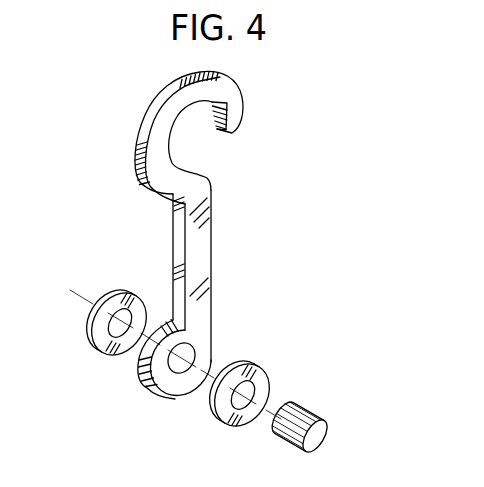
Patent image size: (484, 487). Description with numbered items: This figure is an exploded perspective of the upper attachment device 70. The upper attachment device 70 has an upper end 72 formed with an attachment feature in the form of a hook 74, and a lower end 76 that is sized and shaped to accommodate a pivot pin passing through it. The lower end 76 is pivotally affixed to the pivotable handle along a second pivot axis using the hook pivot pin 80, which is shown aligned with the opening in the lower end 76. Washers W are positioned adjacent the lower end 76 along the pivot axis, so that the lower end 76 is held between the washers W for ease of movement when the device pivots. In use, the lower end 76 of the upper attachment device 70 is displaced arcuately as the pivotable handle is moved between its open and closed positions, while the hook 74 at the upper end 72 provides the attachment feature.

The upper attachment device 70 is at (207, 177).
The upper end 72 is at (168, 84).
The hook 74 is at (194, 124).
The lower end 76 is at (166, 392).
The washers W is at (126, 289).
The hook pivot pin 80 is at (323, 433).